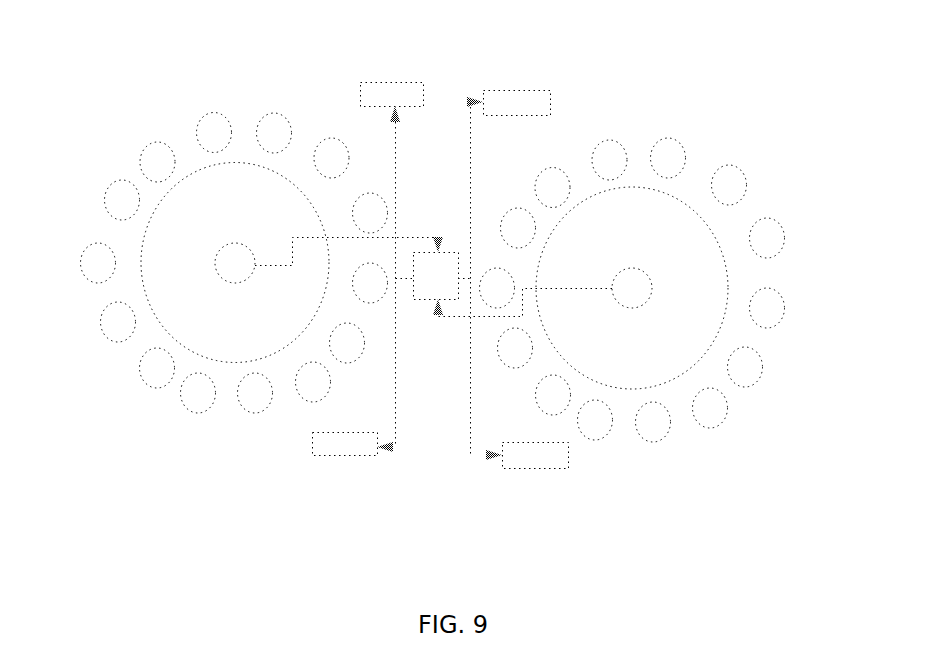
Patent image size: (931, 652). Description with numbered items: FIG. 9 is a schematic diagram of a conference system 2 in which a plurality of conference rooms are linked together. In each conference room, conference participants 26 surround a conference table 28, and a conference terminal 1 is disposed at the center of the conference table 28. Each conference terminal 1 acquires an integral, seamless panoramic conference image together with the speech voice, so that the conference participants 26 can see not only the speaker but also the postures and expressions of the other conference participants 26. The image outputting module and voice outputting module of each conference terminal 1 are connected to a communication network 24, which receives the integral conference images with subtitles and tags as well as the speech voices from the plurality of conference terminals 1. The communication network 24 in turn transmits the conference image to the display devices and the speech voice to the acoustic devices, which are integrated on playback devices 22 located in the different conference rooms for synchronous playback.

The conference terminal 1 is at (237, 265).
The conference system 2 is at (853, 20).
The playback device 22 is at (383, 93).
The communication network 24 is at (435, 282).
The conference participants 26 is at (260, 121).
The conference table 28 is at (175, 307).